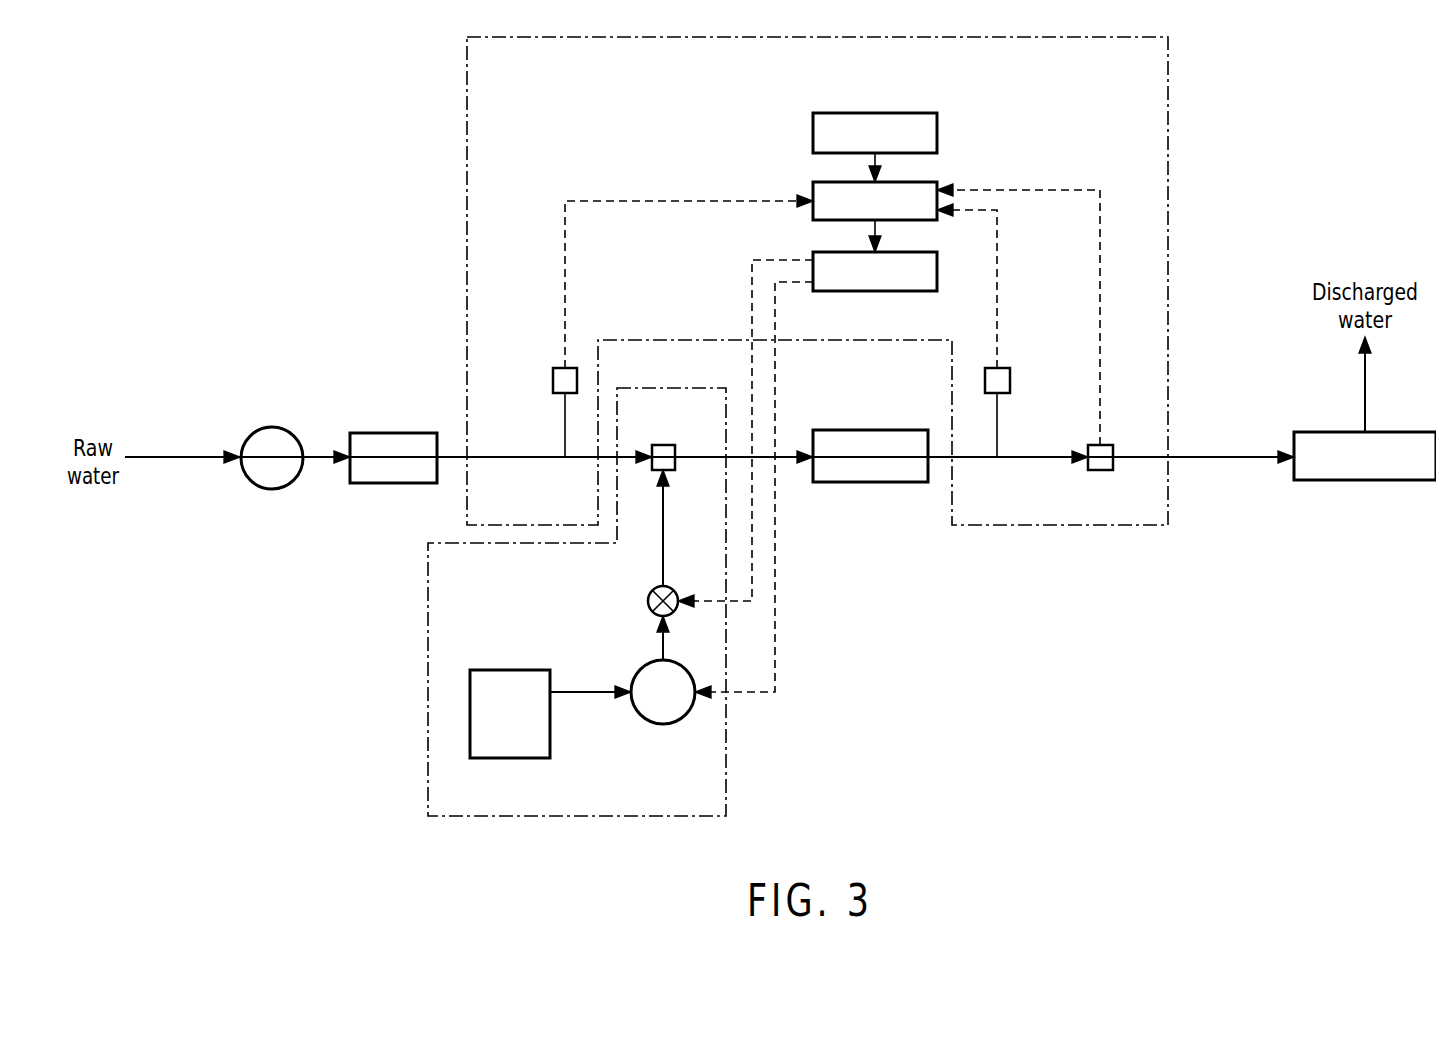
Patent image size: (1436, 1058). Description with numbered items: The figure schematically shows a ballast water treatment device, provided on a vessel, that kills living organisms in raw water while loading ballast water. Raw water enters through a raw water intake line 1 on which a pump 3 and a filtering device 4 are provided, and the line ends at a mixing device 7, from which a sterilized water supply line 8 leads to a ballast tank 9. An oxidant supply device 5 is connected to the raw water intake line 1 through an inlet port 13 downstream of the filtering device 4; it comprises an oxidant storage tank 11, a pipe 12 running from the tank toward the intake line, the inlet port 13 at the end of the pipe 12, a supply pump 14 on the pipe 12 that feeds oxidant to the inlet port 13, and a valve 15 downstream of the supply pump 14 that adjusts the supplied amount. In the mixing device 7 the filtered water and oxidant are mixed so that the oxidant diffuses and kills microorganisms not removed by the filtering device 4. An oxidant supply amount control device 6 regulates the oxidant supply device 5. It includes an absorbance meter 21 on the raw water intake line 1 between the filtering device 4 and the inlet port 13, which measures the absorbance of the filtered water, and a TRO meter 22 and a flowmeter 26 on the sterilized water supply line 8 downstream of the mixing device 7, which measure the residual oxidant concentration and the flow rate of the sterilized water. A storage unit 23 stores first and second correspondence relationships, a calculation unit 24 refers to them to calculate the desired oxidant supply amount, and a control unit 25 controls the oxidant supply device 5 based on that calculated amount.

The raw water intake line 1 is at (180, 459).
The pump 3 is at (272, 489).
The filtering device 4 is at (393, 483).
The oxidant supply device 5 is at (726, 765).
The oxidant supply amount control device 6 is at (1168, 87).
The mixing device 7 is at (872, 483).
The sterilized water supply line 8 is at (1237, 459).
The ballast tank 9 is at (1365, 480).
The oxidant storage tank 11 is at (510, 670).
The pipe 12 is at (663, 562).
The inlet port 13 is at (663, 445).
The supply pump 14 is at (663, 724).
The valve 15 is at (648, 598).
The absorbance meter 21 is at (553, 380).
The TRO meter 22 is at (1010, 379).
The storage unit 23 is at (937, 128).
The calculation unit 24 is at (813, 190).
The control unit 25 is at (937, 268).
The flowmeter 26 is at (1100, 470).